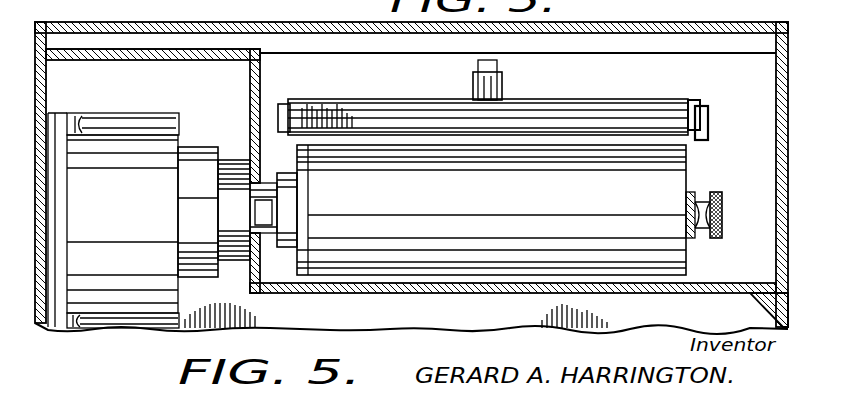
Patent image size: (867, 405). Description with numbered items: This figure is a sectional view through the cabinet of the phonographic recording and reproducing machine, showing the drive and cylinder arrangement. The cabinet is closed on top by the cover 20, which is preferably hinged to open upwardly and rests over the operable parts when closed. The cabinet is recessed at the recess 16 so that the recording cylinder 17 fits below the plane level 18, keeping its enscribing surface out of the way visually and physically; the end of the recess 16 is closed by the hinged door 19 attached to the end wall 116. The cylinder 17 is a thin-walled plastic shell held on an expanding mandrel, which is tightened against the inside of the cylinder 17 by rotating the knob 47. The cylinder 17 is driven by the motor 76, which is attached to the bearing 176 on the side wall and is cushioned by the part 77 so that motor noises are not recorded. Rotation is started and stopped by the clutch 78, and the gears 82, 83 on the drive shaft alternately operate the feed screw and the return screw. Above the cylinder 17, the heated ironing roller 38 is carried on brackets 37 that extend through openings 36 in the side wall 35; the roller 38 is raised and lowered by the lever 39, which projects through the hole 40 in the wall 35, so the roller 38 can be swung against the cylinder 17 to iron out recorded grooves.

The cover 20 is at (121, 22).
The plane level 18 is at (567, 52).
The hinged door 19 is at (776, 164).
The recess 16 is at (513, 273).
The end wall 116 is at (778, 318).
The bearing 176 is at (57, 111).
The cushioning part 77 is at (65, 113).
The motor 76 is at (120, 113).
The gear 82 is at (198, 212).
The gear 83 is at (198, 245).
The clutch 78 is at (234, 210).
The recording cylinder 17 is at (491, 210).
The knob 47 is at (722, 217).
The ironing roller 38 is at (595, 113).
The side wall 35 is at (318, 98).
The lever 39 is at (498, 62).
The hole 40 is at (502, 83).
The brackets 37 is at (705, 100).
The openings 36 is at (710, 115).